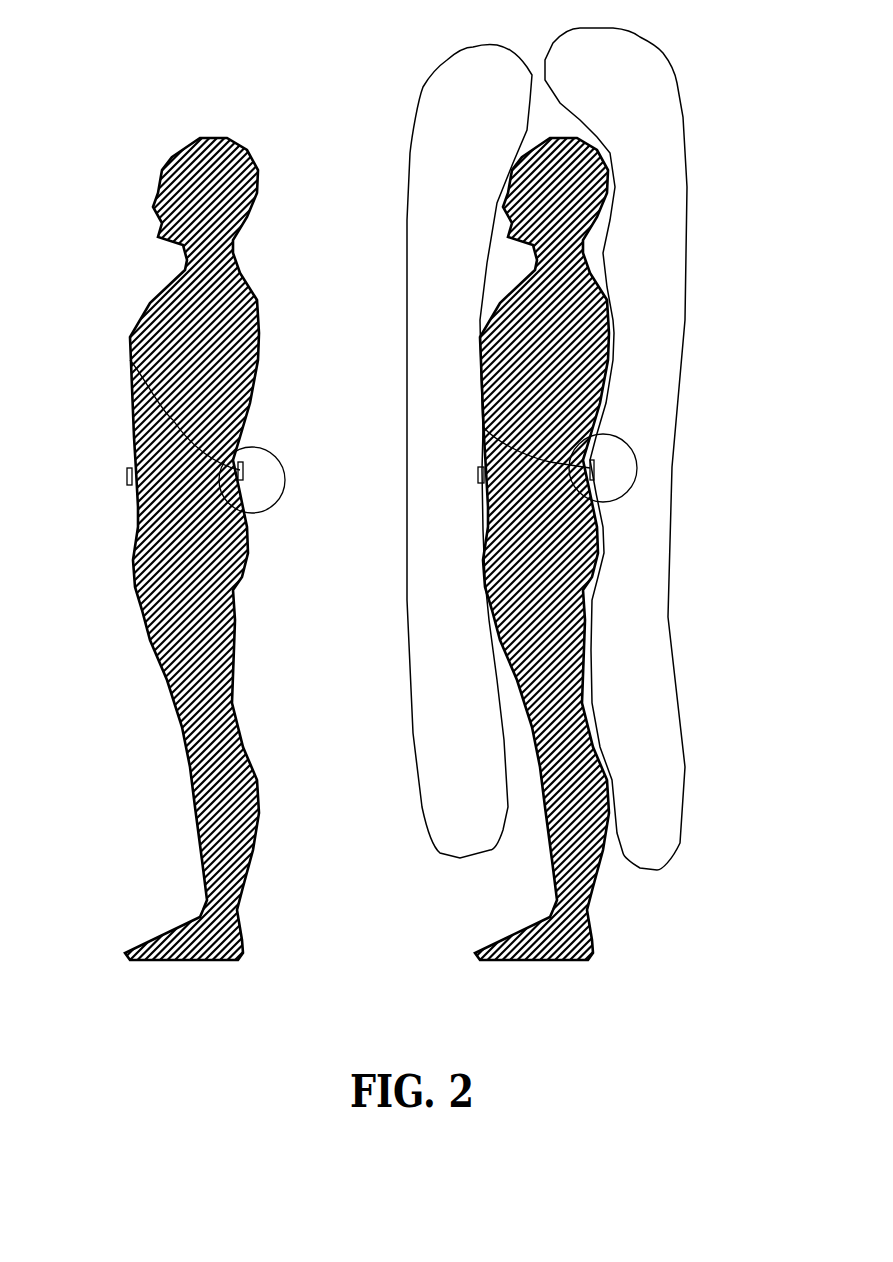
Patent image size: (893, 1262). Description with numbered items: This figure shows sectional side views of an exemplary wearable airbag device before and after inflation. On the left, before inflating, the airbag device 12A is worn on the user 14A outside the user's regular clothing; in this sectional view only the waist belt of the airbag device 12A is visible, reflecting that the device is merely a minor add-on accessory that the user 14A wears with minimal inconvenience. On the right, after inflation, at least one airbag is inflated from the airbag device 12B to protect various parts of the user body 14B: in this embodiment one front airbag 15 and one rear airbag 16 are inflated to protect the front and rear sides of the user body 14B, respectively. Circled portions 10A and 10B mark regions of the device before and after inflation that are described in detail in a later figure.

The user 14A is at (185, 142).
The user body 14B is at (533, 143).
The portion 10A is at (270, 448).
The portion 10B is at (632, 440).
The airbag device 12A is at (128, 477).
The airbag device 12B is at (478, 472).
The front airbag 15 is at (406, 203).
The rear airbag 16 is at (687, 213).